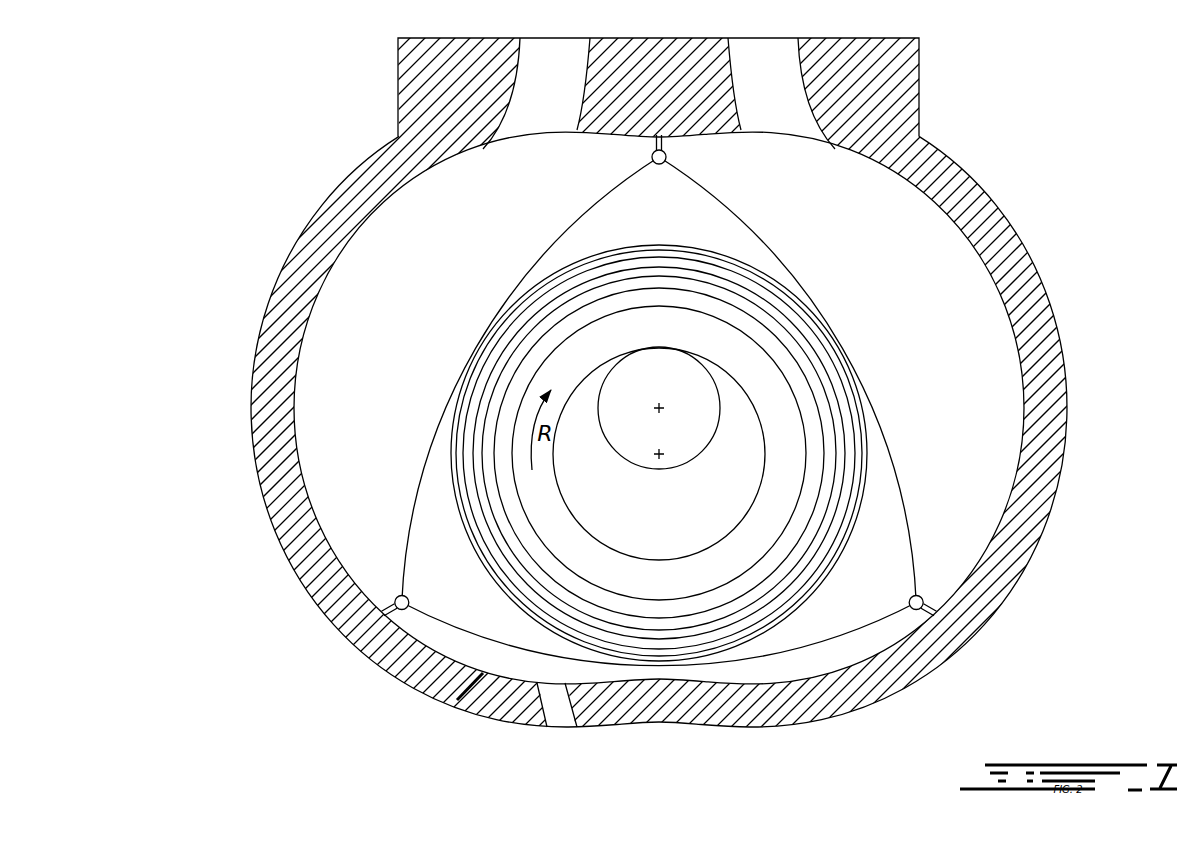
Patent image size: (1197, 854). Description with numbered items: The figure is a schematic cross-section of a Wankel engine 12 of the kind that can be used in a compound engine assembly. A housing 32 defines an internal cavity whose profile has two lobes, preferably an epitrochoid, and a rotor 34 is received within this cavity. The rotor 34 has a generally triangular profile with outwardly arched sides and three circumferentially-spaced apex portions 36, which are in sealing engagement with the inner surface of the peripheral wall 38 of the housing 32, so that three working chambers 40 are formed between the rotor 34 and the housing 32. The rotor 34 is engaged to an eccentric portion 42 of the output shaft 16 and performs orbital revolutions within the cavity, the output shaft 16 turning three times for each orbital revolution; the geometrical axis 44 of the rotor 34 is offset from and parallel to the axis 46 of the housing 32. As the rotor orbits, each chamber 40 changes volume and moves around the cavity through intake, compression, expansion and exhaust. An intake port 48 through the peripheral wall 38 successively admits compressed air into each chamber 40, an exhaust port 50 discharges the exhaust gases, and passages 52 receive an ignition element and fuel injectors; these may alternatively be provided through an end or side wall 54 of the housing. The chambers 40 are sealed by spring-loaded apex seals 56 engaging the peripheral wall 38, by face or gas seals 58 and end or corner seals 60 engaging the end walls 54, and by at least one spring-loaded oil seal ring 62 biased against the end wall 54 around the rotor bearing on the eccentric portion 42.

The rotary internal combustion engine 12 is at (316, 144).
The output shaft 16 is at (656, 439).
The housing 32 is at (682, 407).
The rotor 34 is at (684, 449).
The apex portions 36 is at (937, 621).
The peripheral wall 38 is at (1026, 291).
The working chambers 40 is at (371, 331).
The eccentric portion 42 is at (655, 530).
The geometrical axis 44 is at (655, 456).
The axis 46 is at (654, 408).
The intake port 48 is at (775, 108).
The exhaust port 50 is at (542, 108).
The passages 52 is at (488, 698).
The end or side wall 54 is at (986, 466).
The apex seals 56 is at (387, 613).
The face or gas seals 58 is at (412, 512).
The end or corner seals 60 is at (394, 596).
The oil seal ring 62 is at (760, 593).